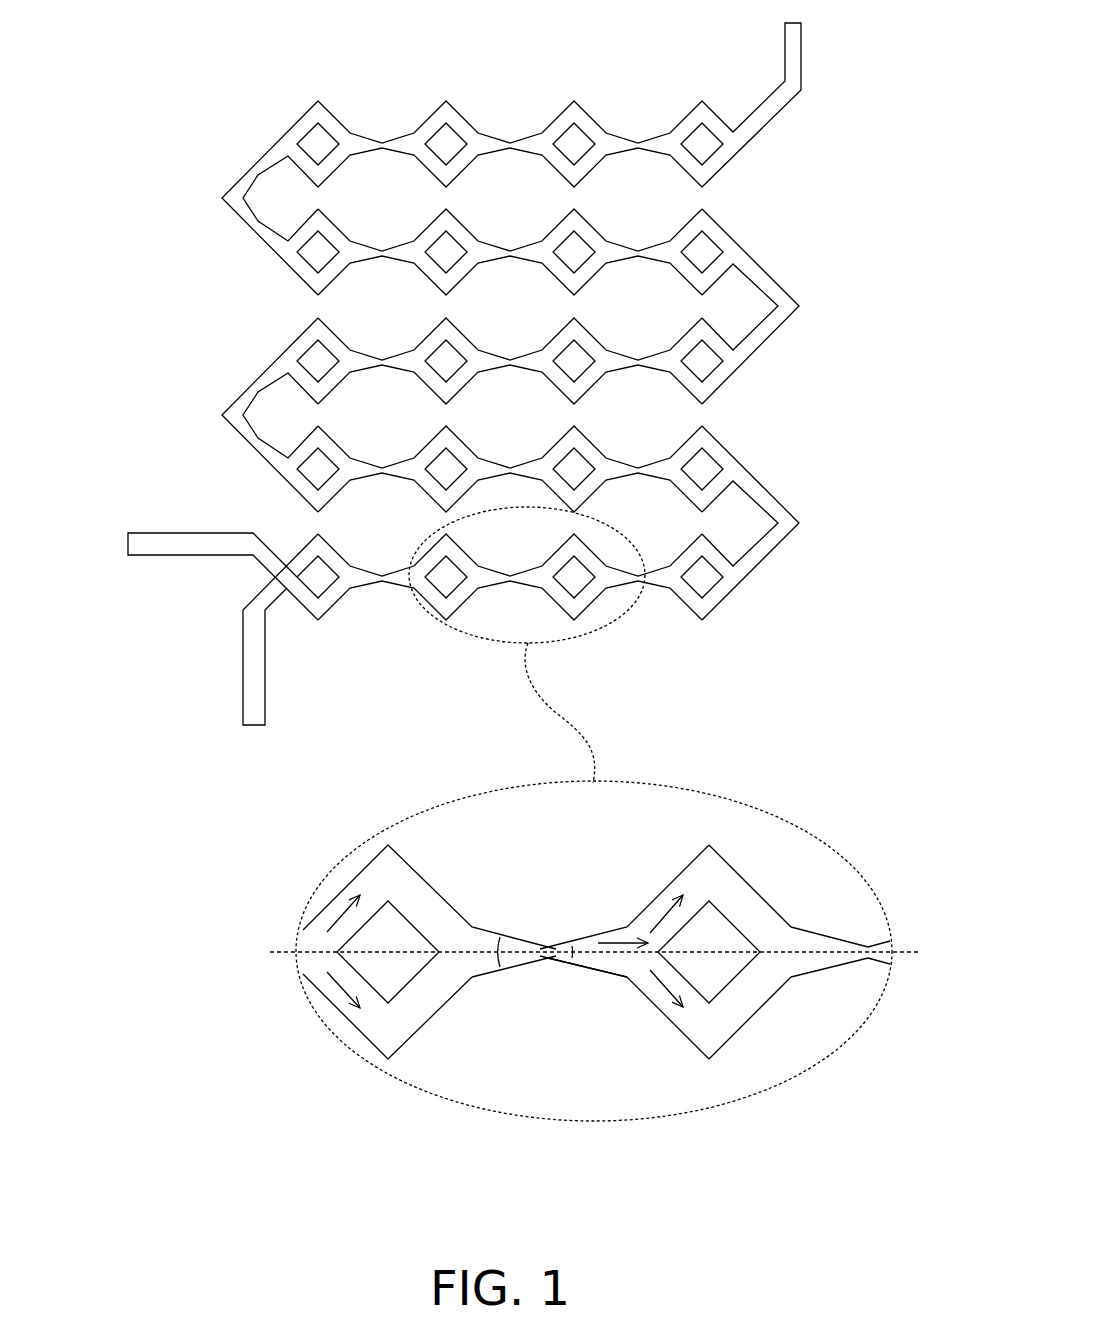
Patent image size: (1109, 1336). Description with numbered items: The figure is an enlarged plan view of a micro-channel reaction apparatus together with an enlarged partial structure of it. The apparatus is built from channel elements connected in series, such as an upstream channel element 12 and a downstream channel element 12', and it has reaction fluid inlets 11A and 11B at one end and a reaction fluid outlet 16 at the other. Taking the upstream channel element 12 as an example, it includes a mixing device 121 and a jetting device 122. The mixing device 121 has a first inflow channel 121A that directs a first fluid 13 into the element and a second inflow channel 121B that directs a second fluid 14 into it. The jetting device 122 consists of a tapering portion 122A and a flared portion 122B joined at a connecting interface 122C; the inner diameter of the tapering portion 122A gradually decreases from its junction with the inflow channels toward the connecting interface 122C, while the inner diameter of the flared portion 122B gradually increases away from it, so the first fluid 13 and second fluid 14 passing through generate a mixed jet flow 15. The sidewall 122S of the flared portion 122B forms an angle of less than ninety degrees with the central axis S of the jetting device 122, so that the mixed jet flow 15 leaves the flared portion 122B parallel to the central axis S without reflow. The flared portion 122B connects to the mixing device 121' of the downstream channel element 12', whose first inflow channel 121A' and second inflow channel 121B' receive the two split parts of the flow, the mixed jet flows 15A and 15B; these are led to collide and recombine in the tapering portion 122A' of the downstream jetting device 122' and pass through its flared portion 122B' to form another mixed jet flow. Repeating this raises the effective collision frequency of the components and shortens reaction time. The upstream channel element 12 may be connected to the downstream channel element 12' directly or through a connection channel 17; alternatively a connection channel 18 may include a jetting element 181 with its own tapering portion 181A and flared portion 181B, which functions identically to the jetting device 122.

The reaction fluid inlet 11A is at (253, 727).
The reaction fluid inlet 11B is at (127, 542).
The upstream channel element 12 is at (376, 806).
The downstream channel element 12' is at (406, 635).
The mixing device 121 is at (280, 998).
The first inflow channel 121A is at (280, 981).
The second inflow channel 121B is at (343, 1046).
The mixing device 121' is at (517, 627).
The first inflow channel 121A' is at (516, 584).
The second inflow channel 121B' is at (516, 627).
The jetting device 122 is at (573, 1098).
The tapering portion 122A is at (496, 1086).
The flared portion 122B is at (626, 1086).
The connecting interface 122C is at (547, 962).
The sidewall 122S is at (587, 970).
The jetting device 122' is at (846, 1047).
The tapering portion 122A' is at (831, 1043).
The flared portion 122B' is at (856, 1028).
The first fluid 13 is at (345, 913).
The second fluid 14 is at (343, 990).
The mixed jet flow 15 is at (625, 940).
The mixed jet flow 15A is at (665, 913).
The mixed jet flow 15B is at (663, 991).
The reaction fluid outlet 16 is at (795, 40).
The connection channel 17 is at (767, 285).
The connection channel 18 is at (181, 380).
The jetting element 181 is at (200, 413).
The tapering portion 181A is at (238, 394).
The flared portion 181B is at (266, 371).
The central axis S is at (598, 954).